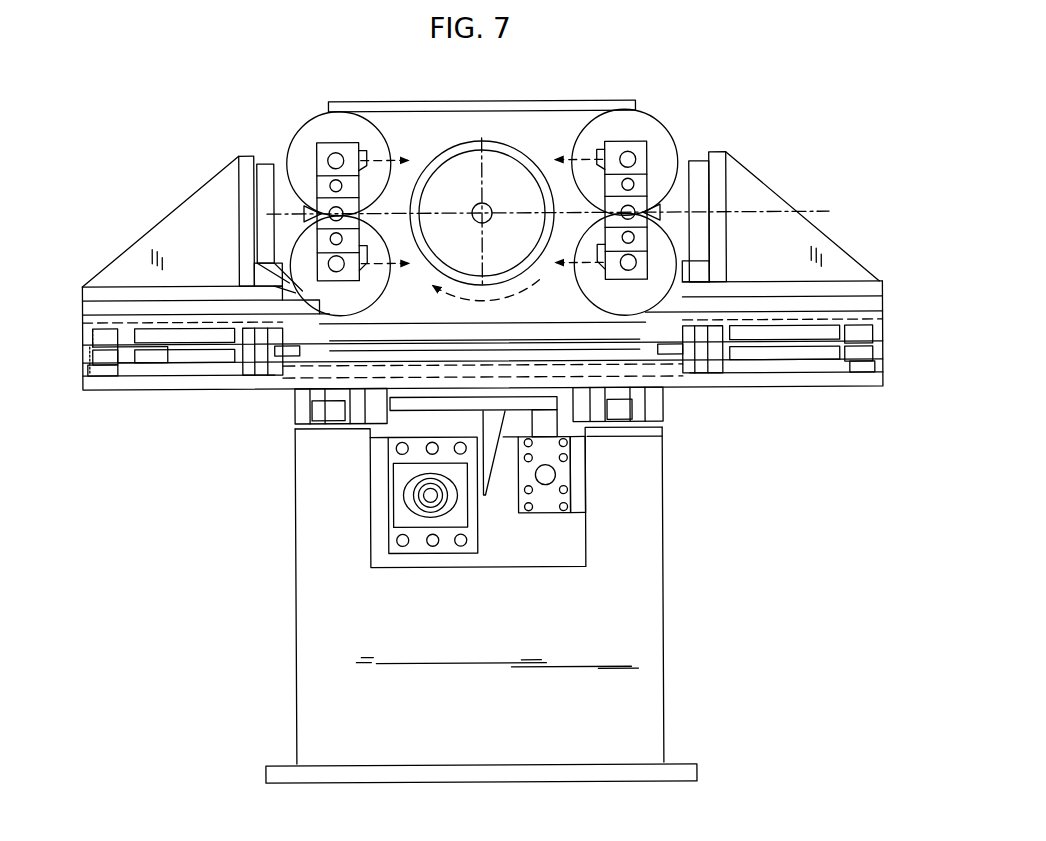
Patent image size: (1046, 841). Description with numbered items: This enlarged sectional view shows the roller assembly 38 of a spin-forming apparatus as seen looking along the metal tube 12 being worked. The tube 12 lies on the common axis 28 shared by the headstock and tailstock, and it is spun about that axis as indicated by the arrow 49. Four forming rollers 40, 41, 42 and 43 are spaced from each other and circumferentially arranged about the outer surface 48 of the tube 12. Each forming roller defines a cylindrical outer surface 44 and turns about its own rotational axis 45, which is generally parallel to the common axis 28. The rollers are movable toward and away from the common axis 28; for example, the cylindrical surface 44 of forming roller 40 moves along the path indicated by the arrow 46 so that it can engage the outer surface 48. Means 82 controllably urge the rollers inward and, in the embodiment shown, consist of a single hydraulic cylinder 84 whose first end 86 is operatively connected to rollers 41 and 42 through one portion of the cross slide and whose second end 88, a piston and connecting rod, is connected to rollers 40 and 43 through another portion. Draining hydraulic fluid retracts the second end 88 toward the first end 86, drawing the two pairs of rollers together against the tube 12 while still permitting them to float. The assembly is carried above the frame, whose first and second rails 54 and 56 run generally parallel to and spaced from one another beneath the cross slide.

The metal tube 12 is at (500, 142).
The common axis 28 is at (488, 204).
The roller assembly 38 is at (690, 122).
The forming roller 40 is at (641, 125).
The forming roller 41 is at (302, 125).
The forming roller 42 is at (257, 255).
The forming roller 43 is at (640, 290).
The cylindrical outer surface 44 is at (322, 111).
The rotational axis 45 is at (337, 160).
The arrow 46 is at (373, 160).
The outer surface 48 is at (457, 148).
The arrow 49 is at (500, 293).
The first rail 54 is at (298, 427).
The second rail 56 is at (610, 423).
The means for controllably urging 82 is at (170, 415).
The hydraulic cylinder 84 is at (140, 320).
The first end 86 is at (83, 333).
The second end 88 is at (277, 318).